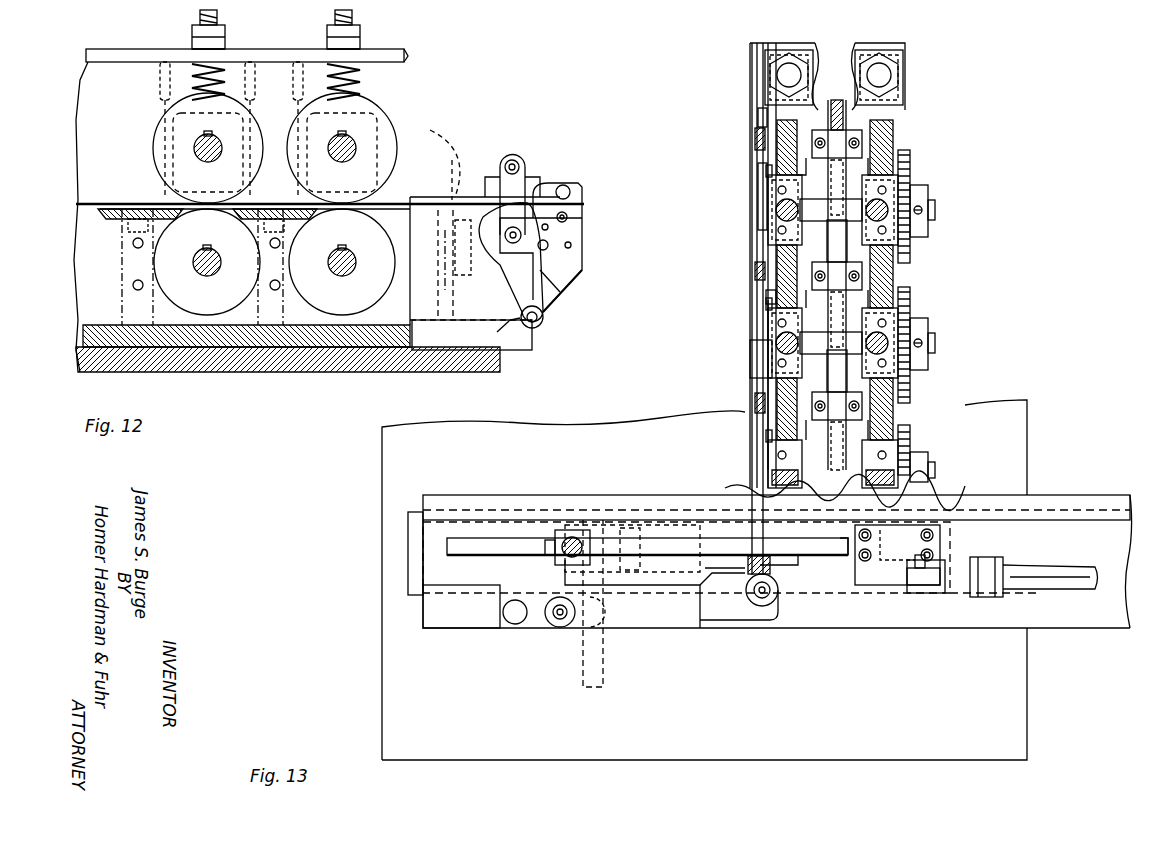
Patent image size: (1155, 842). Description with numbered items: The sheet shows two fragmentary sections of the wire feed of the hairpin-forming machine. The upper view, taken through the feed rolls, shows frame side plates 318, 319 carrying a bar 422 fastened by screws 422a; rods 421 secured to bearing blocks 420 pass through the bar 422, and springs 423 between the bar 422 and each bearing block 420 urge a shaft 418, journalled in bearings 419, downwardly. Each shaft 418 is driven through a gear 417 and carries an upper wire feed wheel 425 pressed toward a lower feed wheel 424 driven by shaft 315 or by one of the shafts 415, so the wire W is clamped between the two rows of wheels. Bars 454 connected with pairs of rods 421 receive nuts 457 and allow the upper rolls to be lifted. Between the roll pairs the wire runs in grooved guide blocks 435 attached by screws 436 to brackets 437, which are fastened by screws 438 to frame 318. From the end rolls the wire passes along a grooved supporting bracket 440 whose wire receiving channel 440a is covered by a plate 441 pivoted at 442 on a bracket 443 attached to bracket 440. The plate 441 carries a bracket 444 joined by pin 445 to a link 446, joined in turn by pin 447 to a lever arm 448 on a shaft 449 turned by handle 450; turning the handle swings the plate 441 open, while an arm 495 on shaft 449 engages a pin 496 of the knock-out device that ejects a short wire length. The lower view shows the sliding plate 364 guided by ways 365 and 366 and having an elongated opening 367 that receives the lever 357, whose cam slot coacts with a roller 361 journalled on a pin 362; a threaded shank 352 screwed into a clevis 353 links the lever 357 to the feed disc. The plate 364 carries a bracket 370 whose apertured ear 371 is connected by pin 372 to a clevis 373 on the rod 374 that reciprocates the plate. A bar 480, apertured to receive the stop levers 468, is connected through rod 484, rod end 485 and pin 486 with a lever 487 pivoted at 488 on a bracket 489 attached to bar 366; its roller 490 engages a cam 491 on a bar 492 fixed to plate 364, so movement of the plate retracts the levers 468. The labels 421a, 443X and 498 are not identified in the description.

In FIG. 12, the shaft 315 is at (329, 264).
In FIG. 13, the frame side plate 318 is at (752, 300).
In FIG. 12, the frame side plate 319 is at (80, 88).
In FIG. 13, the threaded shank 352 is at (555, 550).
In FIG. 13, the clevis 353 is at (560, 565).
In FIG. 13, the lever 357 is at (555, 545).
In FIG. 13, the roller 361 is at (638, 549).
In FIG. 13, the pin 362 is at (648, 528).
In FIG. 13, the sliding plate 364 is at (408, 560).
In FIG. 13, the way 365 is at (500, 495).
In FIG. 13, the way 366 is at (830, 628).
In FIG. 13, the elongated opening 367 is at (860, 535).
In FIG. 13, the bracket 370 is at (940, 537).
In FIG. 13, the apertured ear 371 is at (895, 582).
In FIG. 13, the pin 372 is at (918, 555).
In FIG. 13, the clevis 373 is at (961, 585).
In FIG. 13, the rod 374 is at (1085, 565).
In FIG. 12, the shaft 415 is at (194, 264).
In FIG. 13, the gear 417 is at (910, 166).
In FIG. 12, the shaft 418 is at (207, 134).
In FIG. 13, the shaft 418 is at (935, 211).
In FIG. 13, the bearing 419 is at (778, 190).
In FIG. 13, the bearing block 420 is at (768, 178).
In FIG. 12, the rod 421 is at (192, 20).
In FIG. 13, the rod 421 is at (776, 210).
In FIG. 12, the bolt washer 421a is at (192, 42).
In FIG. 12, the bar 422 is at (90, 54).
In FIG. 12, the screw 422a is at (250, 56).
In FIG. 12, the spring 423 is at (192, 80).
In FIG. 12, the feed wheel 424 is at (195, 313).
In FIG. 12, the wire feed wheel 425 is at (165, 130).
In FIG. 13, the wire feed wheel 425 is at (895, 128).
In FIG. 12, the grooved guide block 435 is at (112, 200).
In FIG. 13, the grooved guide block 435 is at (863, 137).
In FIG. 12, the screw 436 is at (134, 200).
In FIG. 12, the bracket 437 is at (133, 240).
In FIG. 13, the bracket 437 is at (766, 296).
In FIG. 13, the screw 438 is at (755, 272).
In FIG. 12, the grooved supporting bracket 440 is at (500, 342).
In FIG. 12, the wire receiving channel 440a is at (455, 182).
In FIG. 12, the plate 441 is at (500, 162).
In FIG. 12, the pivot 442 is at (566, 186).
In FIG. 12, the bracket 443 is at (574, 268).
In FIG. 12, the bracket edge 443X is at (582, 218).
In FIG. 12, the bracket 444 is at (540, 177).
In FIG. 12, the pin 445 is at (515, 160).
In FIG. 12, the link 446 is at (492, 270).
In FIG. 12, the pin 447 is at (544, 322).
In FIG. 12, the lever arm 448 is at (553, 290).
In FIG. 12, the shaft 449 is at (521, 235).
In FIG. 12, the handle 450 is at (470, 228).
In FIG. 13, the bar 454 is at (903, 100).
In FIG. 13, the nut 457 is at (888, 82).
In FIG. 13, the lever 468 is at (755, 138).
In FIG. 13, the bar 480 is at (750, 110).
In FIG. 13, the rod 484 is at (752, 501).
In FIG. 13, the rod end 485 is at (748, 566).
In FIG. 13, the pin 486 is at (778, 600).
In FIG. 13, the lever 487 is at (775, 628).
In FIG. 13, the pivot 488 is at (560, 627).
In FIG. 13, the bracket 489 is at (515, 630).
In FIG. 13, the roller 490 is at (755, 606).
In FIG. 12, the cam 491 is at (438, 284).
In FIG. 13, the cam 491 is at (703, 592).
In FIG. 13, the bar 492 is at (655, 587).
In FIG. 12, the arm 495 is at (512, 307).
In FIG. 12, the pin 496 is at (440, 250).
In FIG. 12, the cam path 498 is at (460, 152).
In FIG. 12, the wire W is at (80, 204).